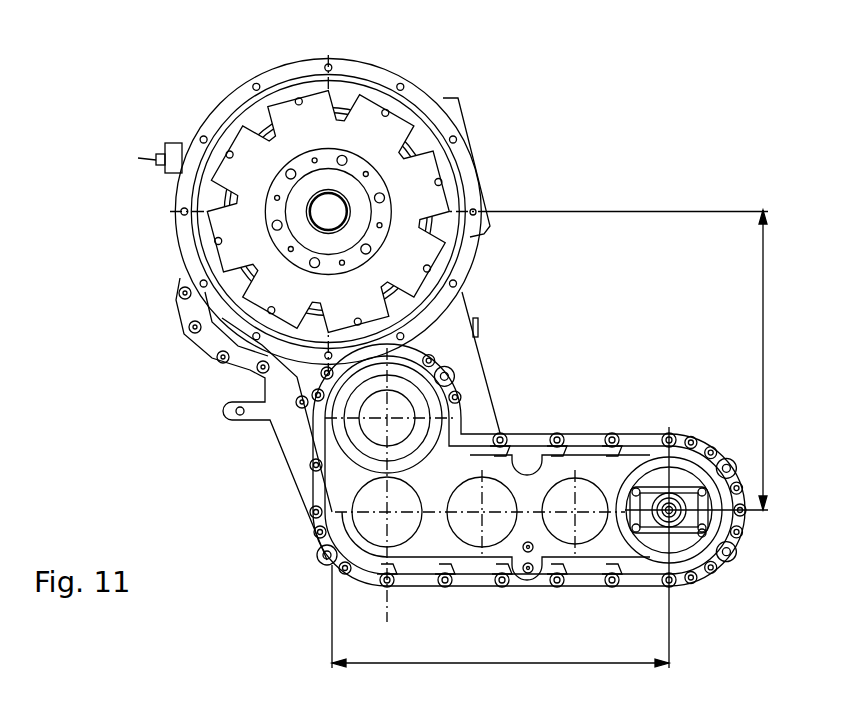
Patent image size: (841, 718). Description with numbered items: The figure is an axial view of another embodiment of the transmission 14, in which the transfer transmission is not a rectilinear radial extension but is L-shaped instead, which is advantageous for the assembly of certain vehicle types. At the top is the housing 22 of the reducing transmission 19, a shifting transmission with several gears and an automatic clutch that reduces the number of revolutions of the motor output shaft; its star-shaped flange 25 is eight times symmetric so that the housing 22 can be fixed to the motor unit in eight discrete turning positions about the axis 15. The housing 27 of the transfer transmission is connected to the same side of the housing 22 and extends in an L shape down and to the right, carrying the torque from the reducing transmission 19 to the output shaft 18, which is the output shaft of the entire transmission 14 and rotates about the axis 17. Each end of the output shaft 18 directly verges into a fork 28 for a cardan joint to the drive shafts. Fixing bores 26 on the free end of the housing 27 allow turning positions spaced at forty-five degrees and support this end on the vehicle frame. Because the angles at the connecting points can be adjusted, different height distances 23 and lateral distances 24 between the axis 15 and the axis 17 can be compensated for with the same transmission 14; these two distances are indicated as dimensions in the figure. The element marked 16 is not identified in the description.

The transmission 14 is at (176, 341).
The axis 15 is at (322, 205).
The hub flange 16 is at (343, 226).
The axis 17 is at (655, 495).
The output shaft 18 is at (673, 527).
The reducing transmission 19 is at (345, 97).
The housing 22 is at (225, 110).
The height distance 23 is at (762, 325).
The lateral distance 24 is at (465, 665).
The flange 25 is at (373, 110).
The fixing bores 26 is at (728, 458).
The housing 27 is at (428, 563).
The fork 28 is at (704, 534).